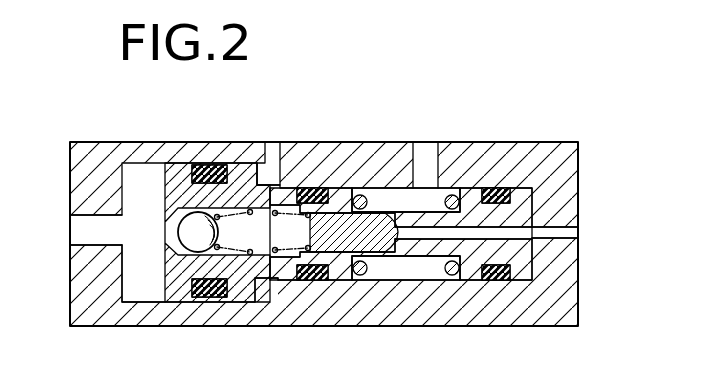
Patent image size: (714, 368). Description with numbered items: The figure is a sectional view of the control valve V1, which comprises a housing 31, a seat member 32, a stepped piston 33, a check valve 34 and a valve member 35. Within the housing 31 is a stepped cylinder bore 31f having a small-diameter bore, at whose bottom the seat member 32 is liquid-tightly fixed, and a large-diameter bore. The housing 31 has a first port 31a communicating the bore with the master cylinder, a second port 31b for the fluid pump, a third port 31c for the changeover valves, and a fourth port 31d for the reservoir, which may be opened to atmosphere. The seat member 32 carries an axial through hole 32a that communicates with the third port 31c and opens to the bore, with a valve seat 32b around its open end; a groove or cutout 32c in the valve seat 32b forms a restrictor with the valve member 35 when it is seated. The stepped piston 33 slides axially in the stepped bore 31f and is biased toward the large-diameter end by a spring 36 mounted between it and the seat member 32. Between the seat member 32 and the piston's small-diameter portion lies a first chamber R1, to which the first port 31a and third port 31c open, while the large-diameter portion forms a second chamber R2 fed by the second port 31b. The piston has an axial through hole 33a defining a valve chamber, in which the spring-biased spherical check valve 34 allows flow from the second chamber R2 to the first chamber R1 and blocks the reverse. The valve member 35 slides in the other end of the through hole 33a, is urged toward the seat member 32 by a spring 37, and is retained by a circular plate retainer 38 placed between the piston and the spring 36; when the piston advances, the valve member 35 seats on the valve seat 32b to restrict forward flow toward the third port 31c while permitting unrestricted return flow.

The housing 31 is at (103, 155).
The first port 31a is at (427, 150).
The second port 31b is at (90, 230).
The third port 31c is at (578, 232).
The fourth port 31d is at (273, 152).
The stepped cylinder bore 31f is at (270, 292).
The seat member 32 is at (520, 282).
The through hole 32a is at (516, 232).
The valve seat 32b is at (398, 200).
The groove or cutout 32c is at (418, 242).
The stepped piston 33 is at (178, 175).
The through hole 33a is at (207, 298).
The check valve 34 is at (183, 250).
The valve member 35 is at (378, 253).
The spring 36 is at (455, 190).
The spring 37 is at (284, 256).
The circular plate retainer 38 is at (348, 192).
The first chamber R1 is at (437, 270).
The second chamber R2 is at (133, 283).
The control valve V1 is at (506, 130).